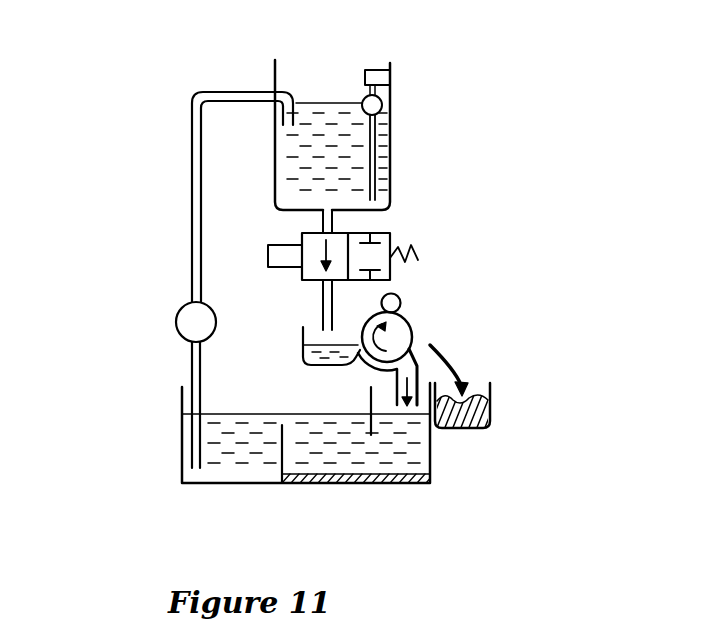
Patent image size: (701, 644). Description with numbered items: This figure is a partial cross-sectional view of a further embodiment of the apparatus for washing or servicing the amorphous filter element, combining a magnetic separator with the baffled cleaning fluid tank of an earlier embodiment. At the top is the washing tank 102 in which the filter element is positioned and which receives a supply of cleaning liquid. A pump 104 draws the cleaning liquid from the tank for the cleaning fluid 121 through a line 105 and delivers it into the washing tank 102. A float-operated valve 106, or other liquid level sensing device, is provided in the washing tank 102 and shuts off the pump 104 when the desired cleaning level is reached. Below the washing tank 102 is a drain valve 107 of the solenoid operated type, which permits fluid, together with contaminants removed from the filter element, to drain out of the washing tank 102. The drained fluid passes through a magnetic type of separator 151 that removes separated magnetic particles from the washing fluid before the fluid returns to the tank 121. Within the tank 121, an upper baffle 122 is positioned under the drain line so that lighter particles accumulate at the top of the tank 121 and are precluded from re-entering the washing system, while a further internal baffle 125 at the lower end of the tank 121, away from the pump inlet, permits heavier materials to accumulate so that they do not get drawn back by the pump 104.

The washing tank 102 is at (392, 165).
The pump 104 is at (176, 325).
The line 105 is at (192, 240).
The float-operated valve 106 is at (362, 99).
The drain valve 107 is at (393, 238).
The tank for the cleaning fluid 121 is at (390, 483).
The upper baffle 122 is at (366, 402).
The internal baffle 125 is at (280, 455).
The magnetic separator 151 is at (412, 327).